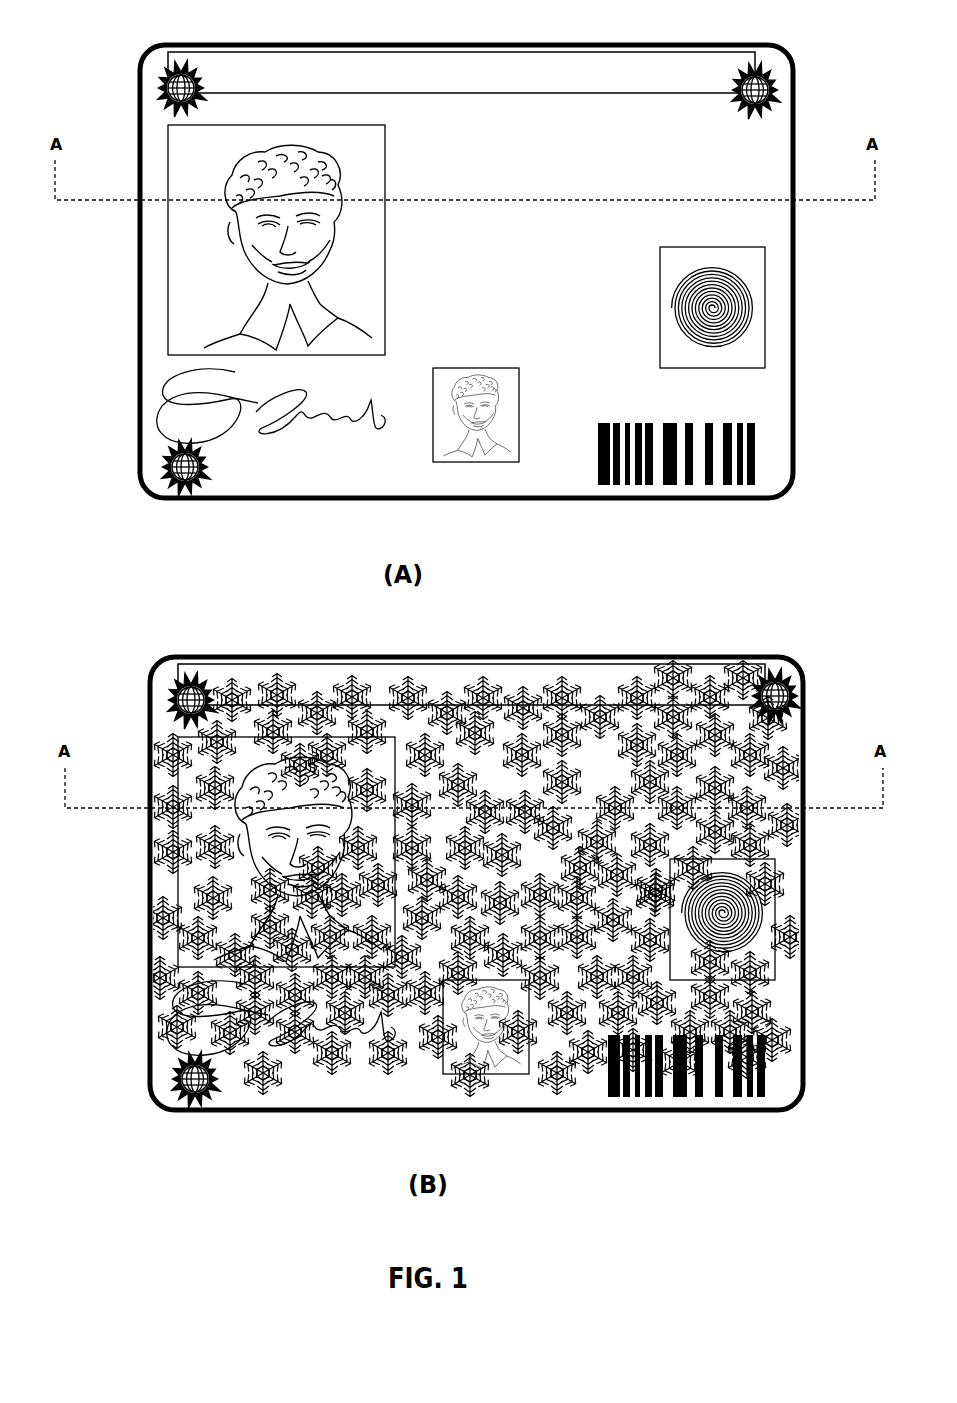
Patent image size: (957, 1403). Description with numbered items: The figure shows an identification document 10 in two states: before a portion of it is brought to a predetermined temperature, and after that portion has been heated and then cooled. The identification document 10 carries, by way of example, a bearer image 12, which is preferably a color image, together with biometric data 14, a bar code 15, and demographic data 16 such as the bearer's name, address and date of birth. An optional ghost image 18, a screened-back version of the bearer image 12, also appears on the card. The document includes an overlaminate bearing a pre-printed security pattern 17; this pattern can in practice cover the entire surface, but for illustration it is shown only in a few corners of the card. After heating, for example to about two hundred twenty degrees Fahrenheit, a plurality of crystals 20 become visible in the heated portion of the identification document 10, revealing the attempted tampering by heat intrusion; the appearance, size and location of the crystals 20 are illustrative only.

In FIG. 1A, the identification document 10 is at (161, 517).
In FIG. 1B, the identification document 10 is at (141, 1132).
In FIG. 1A, the bearer image 12 is at (168, 285).
In FIG. 1B, the bearer image 12 is at (180, 892).
In FIG. 1A, the biometric data 14 is at (765, 308).
In FIG. 1B, the biometric data 14 is at (775, 918).
In FIG. 1A, the bar code 15 is at (757, 455).
In FIG. 1B, the bar code 15 is at (767, 1065).
In FIG. 1A, the demographic data 16 is at (590, 172).
In FIG. 1B, the demographic data 16 is at (598, 782).
In FIG. 1A, the pre-printed security pattern 17 is at (137, 97).
In FIG. 1B, the pre-printed security pattern 17 is at (147, 709).
In FIG. 1A, the ghost image 18 is at (485, 462).
In FIG. 1B, the ghost image 18 is at (505, 1070).
In FIG. 1B, the crystals 20 is at (262, 1090).